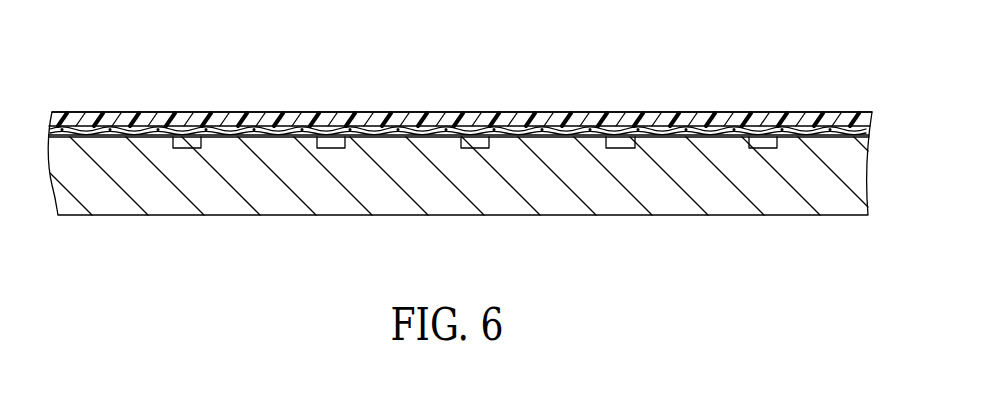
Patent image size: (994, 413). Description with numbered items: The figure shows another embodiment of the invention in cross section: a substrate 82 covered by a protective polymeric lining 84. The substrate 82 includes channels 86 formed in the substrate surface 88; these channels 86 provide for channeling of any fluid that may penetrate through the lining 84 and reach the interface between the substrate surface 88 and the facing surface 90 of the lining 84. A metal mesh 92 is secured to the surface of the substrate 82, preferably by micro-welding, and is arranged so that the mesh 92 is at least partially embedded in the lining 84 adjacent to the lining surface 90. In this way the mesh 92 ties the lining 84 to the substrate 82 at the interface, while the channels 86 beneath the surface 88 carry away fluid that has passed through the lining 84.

The substrate 82 is at (95, 185).
The protective polymeric lining 84 is at (80, 119).
The channels 86 is at (183, 142).
The surface of the substrate 88 is at (166, 128).
The surface of lining 90 is at (363, 138).
The metal mesh 92 is at (603, 128).